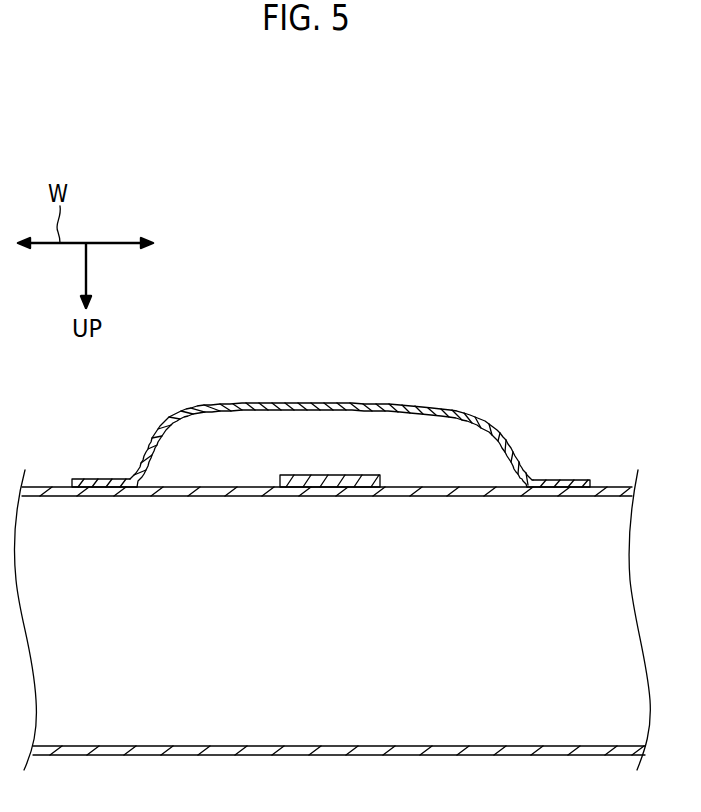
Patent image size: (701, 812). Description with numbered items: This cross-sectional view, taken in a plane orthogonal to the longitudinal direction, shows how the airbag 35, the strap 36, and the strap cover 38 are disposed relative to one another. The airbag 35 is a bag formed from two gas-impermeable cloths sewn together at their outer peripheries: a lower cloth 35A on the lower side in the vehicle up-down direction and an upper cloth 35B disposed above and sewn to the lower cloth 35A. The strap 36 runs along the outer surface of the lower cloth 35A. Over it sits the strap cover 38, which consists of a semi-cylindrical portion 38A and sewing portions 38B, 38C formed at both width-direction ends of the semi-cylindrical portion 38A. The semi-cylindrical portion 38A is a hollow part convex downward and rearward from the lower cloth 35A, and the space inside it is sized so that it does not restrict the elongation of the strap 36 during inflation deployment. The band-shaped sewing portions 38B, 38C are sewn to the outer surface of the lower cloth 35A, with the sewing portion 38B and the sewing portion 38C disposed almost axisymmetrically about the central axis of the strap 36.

The airbag 35 is at (339, 592).
The lower cloth 35A is at (600, 497).
The upper cloth 35B is at (592, 745).
The strap 36 is at (346, 475).
The strap cover 38 is at (331, 412).
The semi-cylindrical portion 38A is at (340, 403).
The sewing portion 38B is at (571, 479).
The sewing portion 38C is at (97, 478).